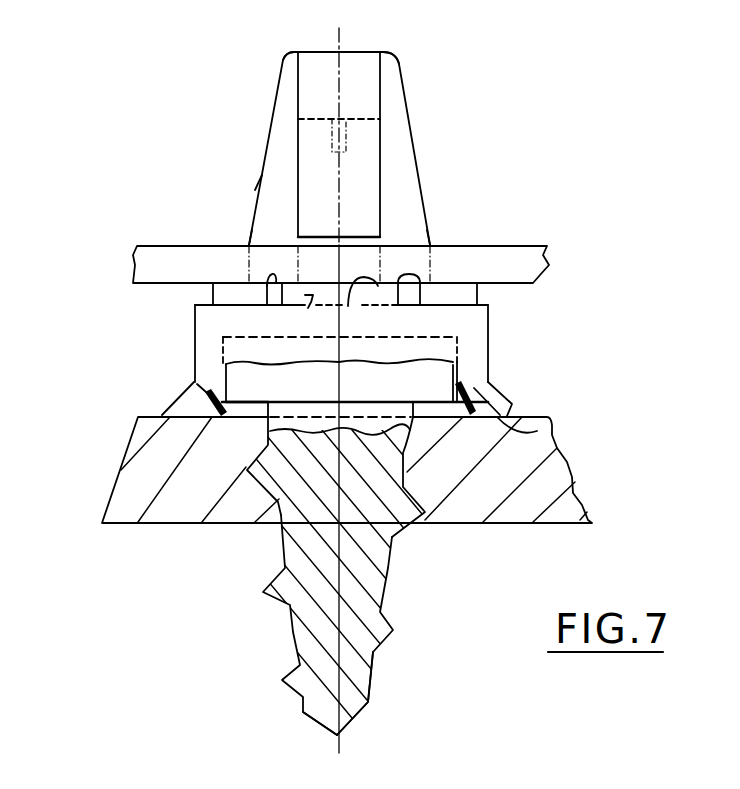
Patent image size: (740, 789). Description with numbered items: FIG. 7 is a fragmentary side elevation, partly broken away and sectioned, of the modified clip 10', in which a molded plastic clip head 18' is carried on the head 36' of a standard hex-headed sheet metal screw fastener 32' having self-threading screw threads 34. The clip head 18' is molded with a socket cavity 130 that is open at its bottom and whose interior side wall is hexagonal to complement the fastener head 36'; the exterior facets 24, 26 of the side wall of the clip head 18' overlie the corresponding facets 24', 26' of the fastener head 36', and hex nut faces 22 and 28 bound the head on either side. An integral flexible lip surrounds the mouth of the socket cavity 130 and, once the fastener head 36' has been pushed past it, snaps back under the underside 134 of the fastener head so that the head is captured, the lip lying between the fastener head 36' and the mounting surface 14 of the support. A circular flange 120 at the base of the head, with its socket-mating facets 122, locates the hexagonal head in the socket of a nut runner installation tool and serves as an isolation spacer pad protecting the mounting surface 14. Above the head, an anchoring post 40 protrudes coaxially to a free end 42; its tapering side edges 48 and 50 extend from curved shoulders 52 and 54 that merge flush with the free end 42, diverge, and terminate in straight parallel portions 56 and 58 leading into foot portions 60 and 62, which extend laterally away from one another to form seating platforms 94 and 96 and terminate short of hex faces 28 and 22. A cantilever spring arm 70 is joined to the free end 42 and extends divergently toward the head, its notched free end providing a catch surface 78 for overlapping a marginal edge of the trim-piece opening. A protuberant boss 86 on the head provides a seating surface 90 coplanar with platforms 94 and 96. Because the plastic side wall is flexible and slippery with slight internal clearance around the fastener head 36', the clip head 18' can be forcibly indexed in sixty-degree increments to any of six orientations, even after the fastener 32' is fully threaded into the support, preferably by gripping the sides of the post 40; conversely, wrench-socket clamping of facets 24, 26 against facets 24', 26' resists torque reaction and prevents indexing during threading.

The clip 10' is at (214, 80).
The tapering side edge 50 is at (418, 160).
The curved shoulder 52 is at (284, 57).
The free end 42 is at (367, 51).
The curved shoulder 54 is at (394, 57).
The anchoring post 40 is at (262, 155).
The spring arm 70 is at (387, 150).
The tapering side edge 48 is at (255, 190).
The straight parallel portion 56 is at (249, 244).
The catch surface 78 is at (367, 237).
The straight parallel portion 58 is at (433, 240).
The post foot portion 60 is at (213, 293).
The post foot portion 62 is at (478, 293).
The hex nut face 28 is at (195, 335).
The hex nut face 22 is at (489, 338).
The plastic clip head 18' is at (406, 372).
The fastener head 36' is at (277, 359).
The facet of fastener head 26' is at (282, 381).
The facet of fastener head 24' is at (398, 380).
The hex nut face 26 is at (217, 309).
The seating platform 94 is at (264, 305).
The protuberant boss 86 is at (303, 316).
The seating surface 90 is at (363, 306).
The seating platform 96 is at (411, 305).
The hex nut face 24 is at (458, 309).
The mounting surface 14 is at (153, 413).
The underside of fastener head 134 is at (257, 405).
The circular flange 120 is at (508, 403).
The socket-mating facets 122 is at (537, 431).
The socket cavity 130 is at (333, 431).
The sheet metal screw fastener 32' is at (372, 580).
The self threading-screw threads 34 is at (397, 630).